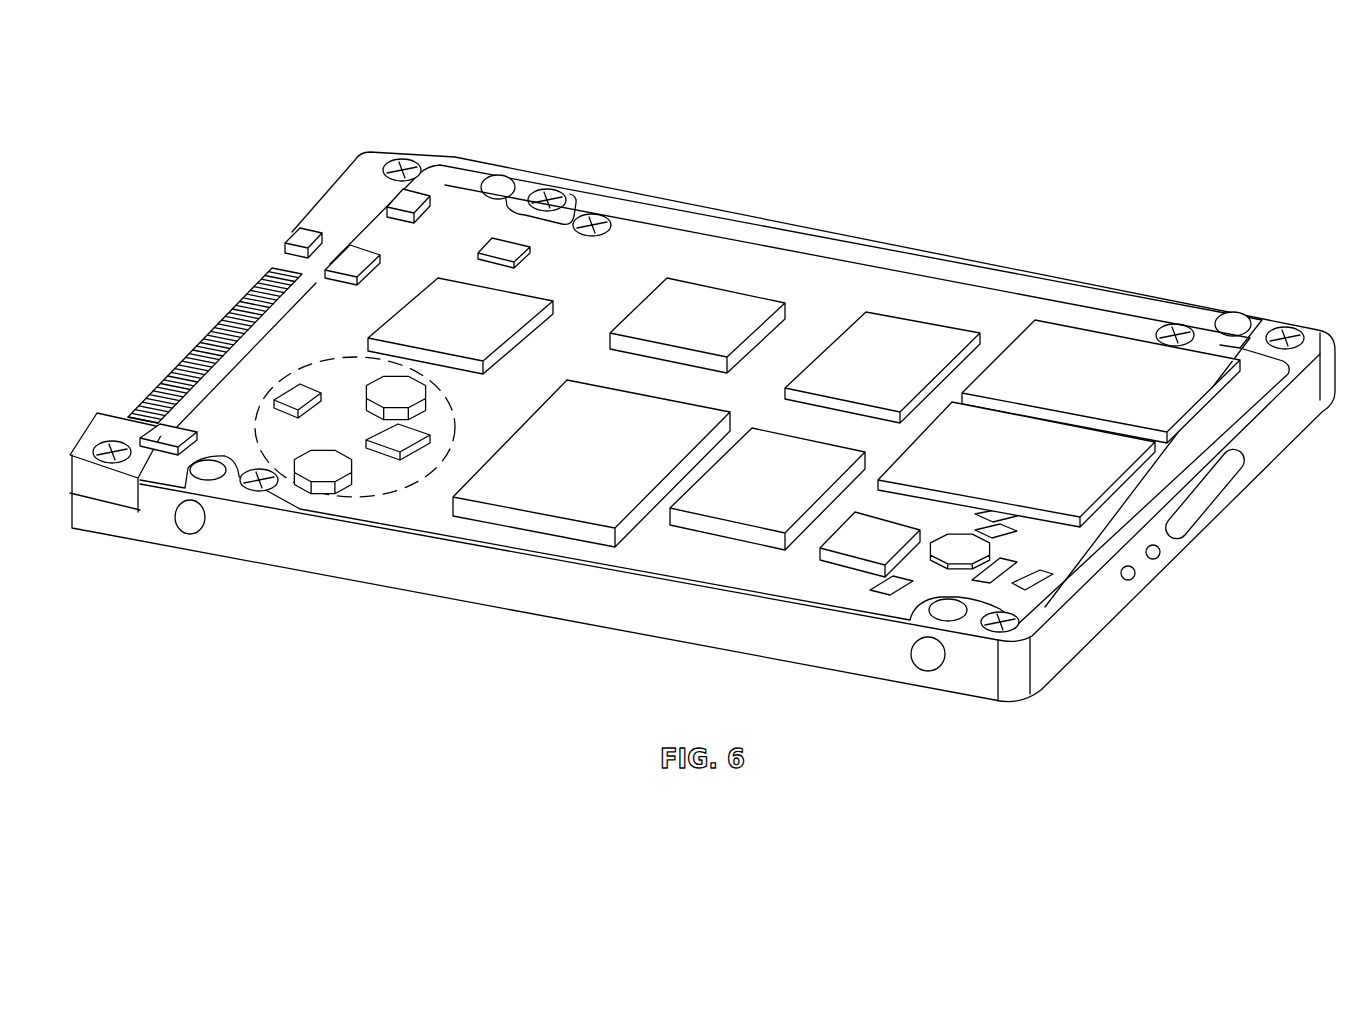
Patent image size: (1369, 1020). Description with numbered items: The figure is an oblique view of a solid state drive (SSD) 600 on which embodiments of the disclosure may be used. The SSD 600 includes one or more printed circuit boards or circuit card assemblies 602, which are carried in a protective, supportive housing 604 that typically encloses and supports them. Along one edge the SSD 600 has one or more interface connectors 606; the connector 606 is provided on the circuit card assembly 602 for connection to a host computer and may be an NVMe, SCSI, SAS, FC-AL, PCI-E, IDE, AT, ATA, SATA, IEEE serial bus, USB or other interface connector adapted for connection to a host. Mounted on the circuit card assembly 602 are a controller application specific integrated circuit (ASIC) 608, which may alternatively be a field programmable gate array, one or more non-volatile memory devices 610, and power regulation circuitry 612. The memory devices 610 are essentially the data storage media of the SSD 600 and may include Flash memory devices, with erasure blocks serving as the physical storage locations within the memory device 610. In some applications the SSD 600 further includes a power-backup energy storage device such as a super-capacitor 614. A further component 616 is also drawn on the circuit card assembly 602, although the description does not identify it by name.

The solid state drive 600 is at (702, 401).
The circuit card assembly 602 is at (793, 275).
The housing 604 is at (400, 577).
The interface connector 606 is at (170, 372).
The controller application specific integrated circuit 608 is at (430, 303).
The non-volatile memory devices 610 is at (1113, 357).
The power regulation circuitry 612 is at (312, 367).
The super-capacitor 614 is at (590, 530).
The chip component 616 is at (683, 298).